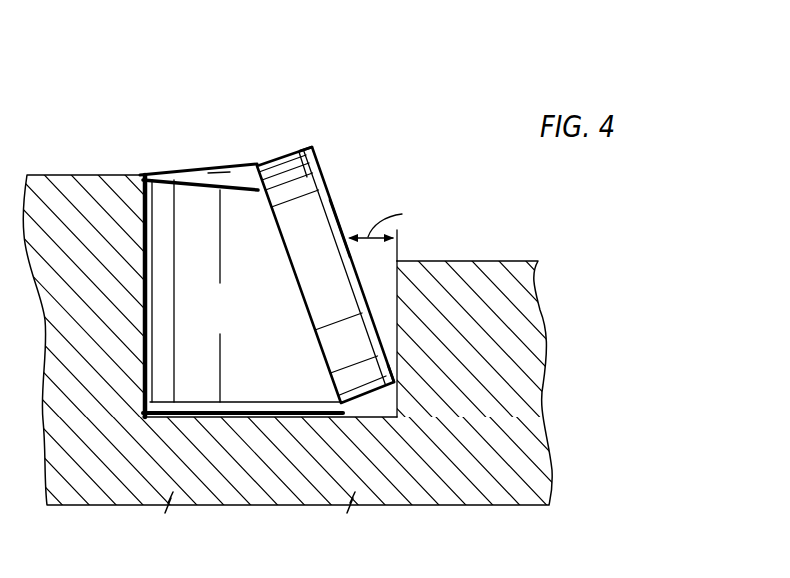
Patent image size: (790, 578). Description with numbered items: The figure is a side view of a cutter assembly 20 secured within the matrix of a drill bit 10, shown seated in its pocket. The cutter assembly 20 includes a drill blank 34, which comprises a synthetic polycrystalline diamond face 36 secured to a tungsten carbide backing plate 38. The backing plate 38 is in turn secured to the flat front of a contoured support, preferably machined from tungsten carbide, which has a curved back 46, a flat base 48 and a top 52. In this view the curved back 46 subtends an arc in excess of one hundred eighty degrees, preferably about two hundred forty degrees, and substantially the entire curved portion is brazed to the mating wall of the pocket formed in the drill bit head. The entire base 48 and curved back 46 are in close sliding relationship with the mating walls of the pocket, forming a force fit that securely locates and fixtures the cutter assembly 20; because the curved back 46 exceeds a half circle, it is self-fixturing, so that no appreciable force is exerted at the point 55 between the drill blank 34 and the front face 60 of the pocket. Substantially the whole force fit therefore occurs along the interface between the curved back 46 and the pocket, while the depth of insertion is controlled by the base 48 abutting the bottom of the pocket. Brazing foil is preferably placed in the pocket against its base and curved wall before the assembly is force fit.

The drill bit 10 is at (533, 445).
The cutter assembly 20 is at (400, 215).
The drill blank 34 is at (323, 148).
The synthetic polycrystalline diamond face 36 is at (343, 215).
The tungsten carbide backing plate 38 is at (283, 175).
The curved back 46 is at (231, 317).
The flat base 48 is at (253, 418).
The top 52 is at (205, 175).
The point 55 is at (395, 385).
The front face of the pocket 60 is at (422, 273).